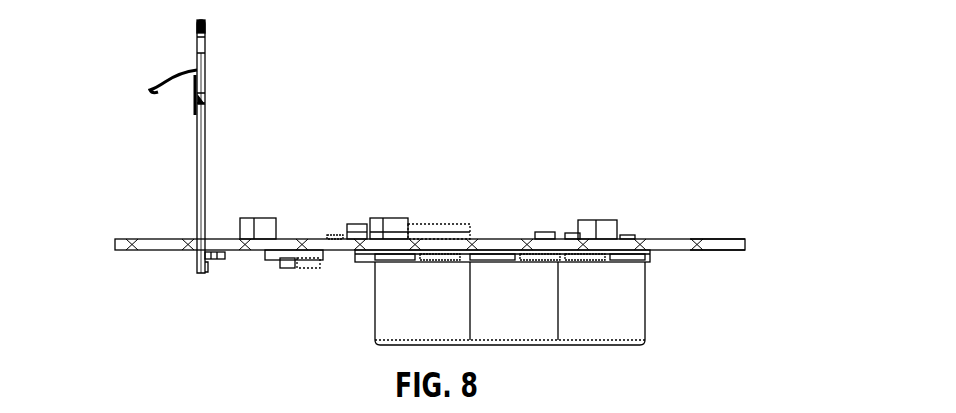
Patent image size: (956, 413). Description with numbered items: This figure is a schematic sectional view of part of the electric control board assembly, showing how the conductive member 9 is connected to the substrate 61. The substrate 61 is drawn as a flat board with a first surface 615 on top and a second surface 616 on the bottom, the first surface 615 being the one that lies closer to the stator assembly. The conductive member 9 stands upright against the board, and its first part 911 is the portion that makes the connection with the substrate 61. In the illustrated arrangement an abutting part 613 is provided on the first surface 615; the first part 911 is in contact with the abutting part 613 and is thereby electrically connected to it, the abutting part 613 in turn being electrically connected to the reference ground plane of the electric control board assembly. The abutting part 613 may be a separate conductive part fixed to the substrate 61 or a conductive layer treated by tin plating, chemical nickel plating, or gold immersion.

The conductive member 9 is at (210, 142).
The substrate 61 is at (138, 229).
The first part 911 is at (197, 237).
The abutting part 613 is at (207, 238).
The first surface 615 is at (818, 218).
The second surface 616 is at (718, 250).